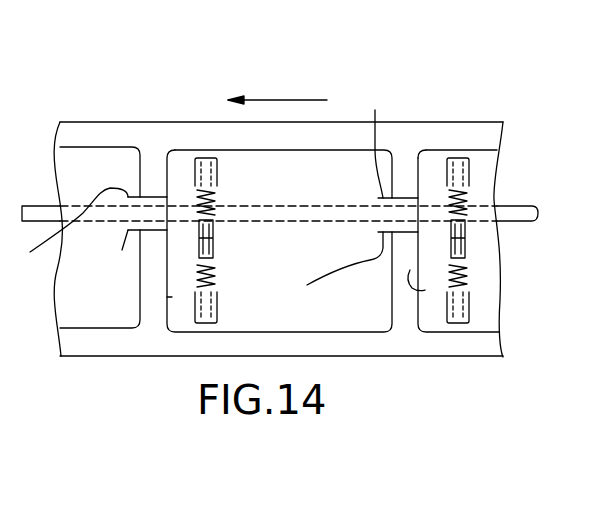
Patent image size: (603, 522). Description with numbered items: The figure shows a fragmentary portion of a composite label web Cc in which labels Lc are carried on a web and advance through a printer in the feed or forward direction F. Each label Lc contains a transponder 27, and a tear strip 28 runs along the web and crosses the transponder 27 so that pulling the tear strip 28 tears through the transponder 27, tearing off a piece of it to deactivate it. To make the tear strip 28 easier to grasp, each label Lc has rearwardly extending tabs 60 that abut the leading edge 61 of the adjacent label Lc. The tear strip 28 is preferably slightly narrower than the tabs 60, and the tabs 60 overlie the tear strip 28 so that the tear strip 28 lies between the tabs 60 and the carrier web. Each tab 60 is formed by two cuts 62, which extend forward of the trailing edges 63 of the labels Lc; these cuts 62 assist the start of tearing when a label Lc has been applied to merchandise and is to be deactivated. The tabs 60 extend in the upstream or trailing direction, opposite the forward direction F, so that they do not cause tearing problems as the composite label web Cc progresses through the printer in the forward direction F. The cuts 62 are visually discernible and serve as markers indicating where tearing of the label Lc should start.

The transponder 27 is at (223, 208).
The tear strip 28 is at (45, 210).
The tabs 60 is at (138, 265).
The leading edge 61 is at (167, 297).
The cuts 62 is at (198, 196).
The trailing edges 63 is at (142, 183).
The labels Lc is at (192, 160).
The composite label web Cc is at (427, 361).
The forward direction F is at (282, 100).